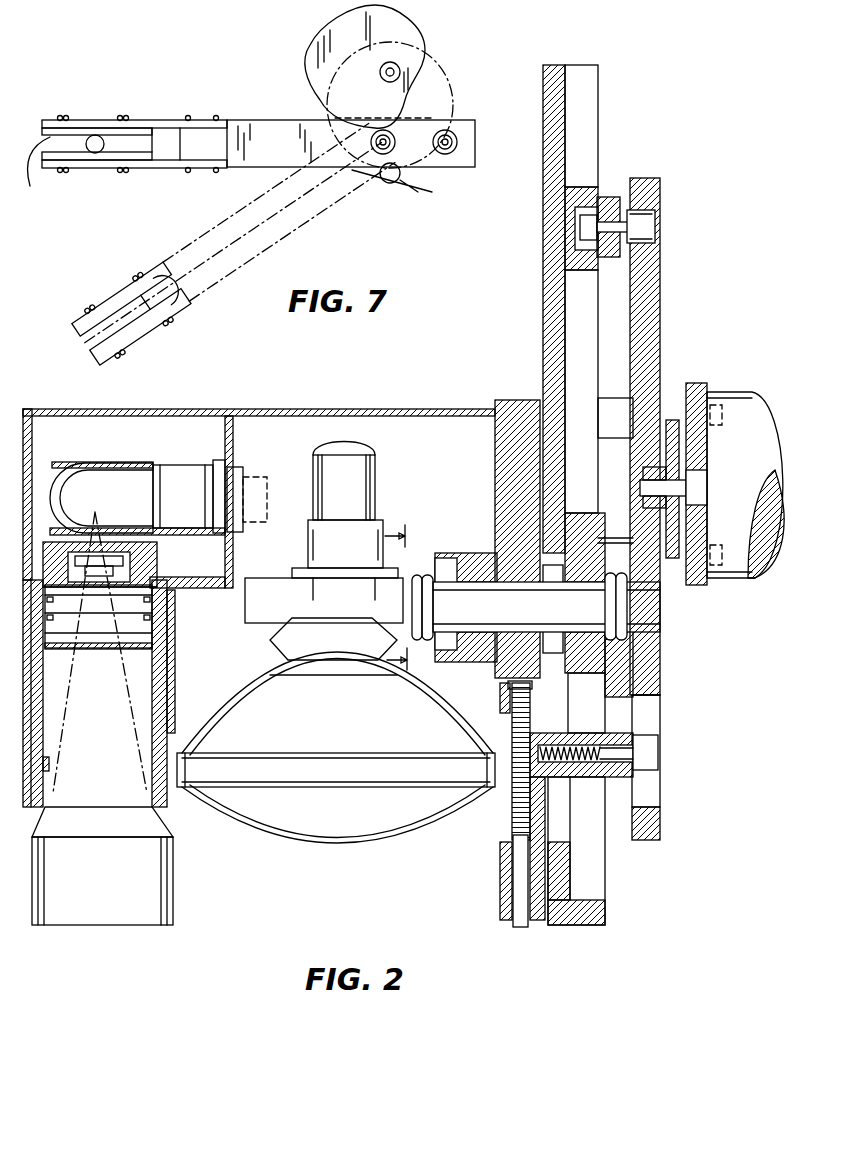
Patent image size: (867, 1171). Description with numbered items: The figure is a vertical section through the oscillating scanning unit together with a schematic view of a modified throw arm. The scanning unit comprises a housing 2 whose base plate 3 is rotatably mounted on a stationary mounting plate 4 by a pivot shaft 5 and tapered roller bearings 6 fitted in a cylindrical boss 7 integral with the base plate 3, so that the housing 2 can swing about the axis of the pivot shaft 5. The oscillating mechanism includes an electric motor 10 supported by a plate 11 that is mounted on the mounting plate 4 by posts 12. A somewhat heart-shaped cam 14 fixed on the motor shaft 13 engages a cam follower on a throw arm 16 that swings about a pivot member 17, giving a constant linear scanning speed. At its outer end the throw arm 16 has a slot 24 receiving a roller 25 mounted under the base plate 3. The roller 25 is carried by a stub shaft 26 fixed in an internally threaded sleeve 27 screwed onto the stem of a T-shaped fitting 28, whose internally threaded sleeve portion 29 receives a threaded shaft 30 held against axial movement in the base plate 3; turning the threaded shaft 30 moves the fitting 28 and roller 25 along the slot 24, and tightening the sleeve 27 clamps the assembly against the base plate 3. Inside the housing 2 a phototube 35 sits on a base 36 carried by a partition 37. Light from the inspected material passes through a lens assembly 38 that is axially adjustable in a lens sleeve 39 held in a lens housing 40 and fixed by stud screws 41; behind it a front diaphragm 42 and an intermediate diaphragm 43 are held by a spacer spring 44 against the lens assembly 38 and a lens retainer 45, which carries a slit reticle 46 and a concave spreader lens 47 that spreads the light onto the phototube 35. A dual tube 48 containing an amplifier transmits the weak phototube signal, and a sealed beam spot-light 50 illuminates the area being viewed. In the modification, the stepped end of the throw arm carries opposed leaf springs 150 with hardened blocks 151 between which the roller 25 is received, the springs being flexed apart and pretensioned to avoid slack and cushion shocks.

In FIG. 2, the housing 2 is at (264, 408).
In FIG. 2, the base plate 3 is at (512, 402).
In FIG. 2, the mounting plate 4 is at (565, 381).
In FIG. 7, the pivot shaft 5 is at (395, 140).
In FIG. 2, the pivot shaft 5 is at (685, 620).
In FIG. 2, the tapered roller bearings 6 is at (447, 560).
In FIG. 2, the cylindrical boss 7 is at (472, 556).
In FIG. 2, the electric motor 10 is at (754, 583).
In FIG. 2, the plate 11 is at (694, 384).
In FIG. 2, the posts 12 is at (667, 397).
In FIG. 7, the motor shaft 13 is at (388, 82).
In FIG. 2, the motor shaft 13 is at (640, 488).
In FIG. 7, the cam 14 is at (410, 30).
In FIG. 2, the cam 14 is at (663, 560).
In FIG. 7, the throw arm 16 is at (262, 118).
In FIG. 2, the throw arm 16 is at (648, 840).
In FIG. 7, the pivot member 17 is at (452, 132).
In FIG. 2, the pivot member 17 is at (658, 228).
In FIG. 2, the slot 24 is at (660, 699).
In FIG. 7, the roller 25 is at (96, 135).
In FIG. 2, the roller 25 is at (656, 752).
In FIG. 2, the stub shaft 26 is at (624, 745).
In FIG. 2, the internally threaded sleeve 27 is at (615, 780).
In FIG. 2, the T-shaped fitting 28 is at (577, 745).
In FIG. 2, the internally threaded sleeve portion 29 is at (512, 792).
In FIG. 2, the threaded shaft 30 is at (515, 830).
In FIG. 2, the phototube 35 is at (52, 492).
In FIG. 2, the base 36 is at (248, 473).
In FIG. 2, the partition 37 is at (225, 432).
In FIG. 2, the lens assembly 38 is at (173, 874).
In FIG. 2, the lens sleeve 39 is at (170, 722).
In FIG. 2, the lens housing 40 is at (175, 681).
In FIG. 2, the stud screws 41 is at (52, 762).
In FIG. 2, the front diaphragm 42 is at (175, 650).
In FIG. 2, the intermediate diaphragm 43 is at (175, 598).
In FIG. 2, the spacer spring 44 is at (175, 622).
In FIG. 2, the lens retainer 45 is at (158, 575).
In FIG. 2, the reticle 46 is at (158, 556).
In FIG. 2, the concave spreader lens 47 is at (103, 530).
In FIG. 2, the dual tube 48 is at (380, 492).
In FIG. 2, the sealed beam spot-light 50 is at (312, 842).
In FIG. 7, the leaf springs 150 is at (150, 120).
In FIG. 7, the hardened blocks 151 is at (44, 168).